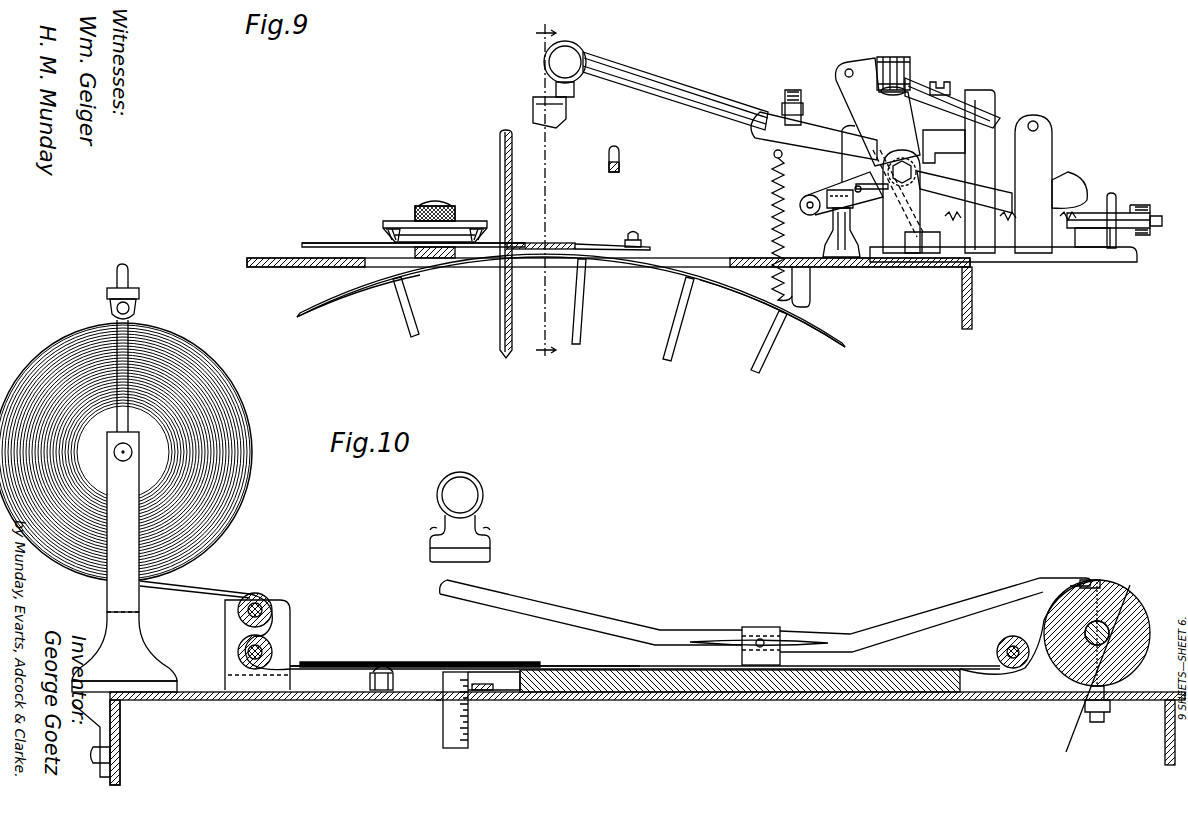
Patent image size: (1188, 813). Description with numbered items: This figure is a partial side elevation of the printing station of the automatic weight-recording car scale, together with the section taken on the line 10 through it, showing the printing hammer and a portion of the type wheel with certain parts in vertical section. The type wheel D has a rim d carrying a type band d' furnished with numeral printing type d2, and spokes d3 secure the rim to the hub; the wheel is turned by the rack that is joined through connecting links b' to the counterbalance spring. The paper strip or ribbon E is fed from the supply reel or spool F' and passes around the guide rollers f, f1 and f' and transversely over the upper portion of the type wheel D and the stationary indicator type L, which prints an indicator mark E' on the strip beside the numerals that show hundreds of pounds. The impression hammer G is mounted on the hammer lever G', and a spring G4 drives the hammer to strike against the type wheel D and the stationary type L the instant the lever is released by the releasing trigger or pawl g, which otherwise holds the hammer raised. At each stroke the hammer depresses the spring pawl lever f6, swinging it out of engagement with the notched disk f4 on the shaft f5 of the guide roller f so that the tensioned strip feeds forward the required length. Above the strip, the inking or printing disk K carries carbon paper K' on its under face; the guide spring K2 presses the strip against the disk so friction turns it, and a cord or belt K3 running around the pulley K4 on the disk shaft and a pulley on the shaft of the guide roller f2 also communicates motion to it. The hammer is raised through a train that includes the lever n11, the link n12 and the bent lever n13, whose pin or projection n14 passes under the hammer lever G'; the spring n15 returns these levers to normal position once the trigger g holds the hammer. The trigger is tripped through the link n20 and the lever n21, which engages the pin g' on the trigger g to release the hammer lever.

In FIG. 9, the section line 10 is at (546, 194).
In FIG. 9, the type wheel D is at (850, 346).
In FIG. 10, the type wheel D is at (441, 740).
In FIG. 9, the rim d is at (358, 306).
In FIG. 9, the type band d' is at (780, 313).
In FIG. 10, the numeral printing type d2 is at (470, 733).
In FIG. 9, the spokes d3 is at (410, 325).
In FIG. 9, the connecting links b' is at (485, 242).
In FIG. 9, the stationary indicator type L is at (527, 294).
In FIG. 10, the stationary indicator type L is at (493, 680).
In FIG. 9, the spring pawl lever f6 is at (622, 160).
In FIG. 10, the spring pawl lever f6 is at (536, 592).
In FIG. 9, the impression hammer G is at (628, 85).
In FIG. 10, the impression hammer G is at (472, 517).
In FIG. 9, the printing hammer lever G' is at (814, 125).
In FIG. 9, the spring G4 is at (770, 188).
In FIG. 9, the pin or projection n14 is at (818, 194).
In FIG. 9, the spring n15 is at (880, 198).
In FIG. 9, the bent lever n13 is at (878, 112).
In FIG. 9, the link n12 is at (881, 57).
In FIG. 9, the lever n11 is at (924, 84).
In FIG. 9, the releasing trigger or pawl g is at (1002, 184).
In FIG. 9, the pin g' is at (1003, 264).
In FIG. 9, the link n20 is at (1125, 206).
In FIG. 9, the lever n21 is at (1150, 224).
In FIG. 9, the inking or printing disk K is at (413, 222).
In FIG. 10, the inking or printing disk K is at (420, 648).
In FIG. 9, the carbon paper K' is at (396, 244).
In FIG. 10, the carbon paper K' is at (366, 678).
In FIG. 9, the guide spring K2 is at (628, 238).
In FIG. 9, the cord or belt K3 is at (385, 232).
In FIG. 9, the pulley K4 is at (393, 214).
In FIG. 9, the paper strip or ribbon E is at (578, 227).
In FIG. 10, the paper strip or ribbon E is at (465, 647).
In FIG. 10, the indicator mark E' is at (687, 674).
In FIG. 10, the supply reel or spool F' is at (126, 443).
In FIG. 10, the paper strip guide roller f2 is at (238, 616).
In FIG. 10, the guide roller f' is at (276, 644).
In FIG. 10, the guide roller f1 is at (1013, 637).
In FIG. 10, the notched disk f4 is at (1097, 580).
In FIG. 10, the shaft f5 is at (1125, 586).
In FIG. 10, the guide roller f is at (1152, 648).